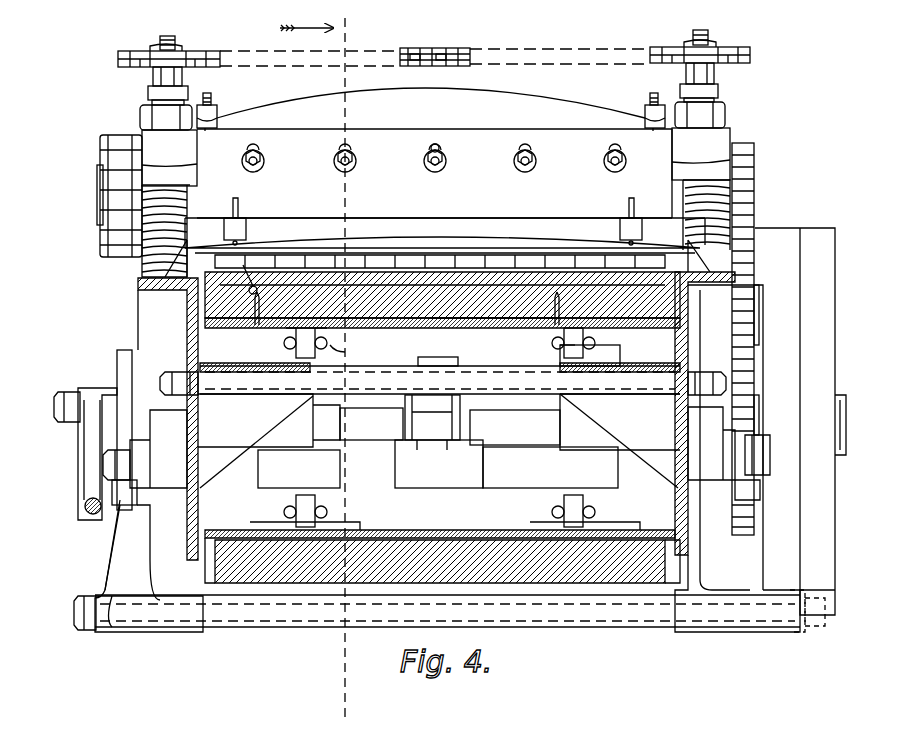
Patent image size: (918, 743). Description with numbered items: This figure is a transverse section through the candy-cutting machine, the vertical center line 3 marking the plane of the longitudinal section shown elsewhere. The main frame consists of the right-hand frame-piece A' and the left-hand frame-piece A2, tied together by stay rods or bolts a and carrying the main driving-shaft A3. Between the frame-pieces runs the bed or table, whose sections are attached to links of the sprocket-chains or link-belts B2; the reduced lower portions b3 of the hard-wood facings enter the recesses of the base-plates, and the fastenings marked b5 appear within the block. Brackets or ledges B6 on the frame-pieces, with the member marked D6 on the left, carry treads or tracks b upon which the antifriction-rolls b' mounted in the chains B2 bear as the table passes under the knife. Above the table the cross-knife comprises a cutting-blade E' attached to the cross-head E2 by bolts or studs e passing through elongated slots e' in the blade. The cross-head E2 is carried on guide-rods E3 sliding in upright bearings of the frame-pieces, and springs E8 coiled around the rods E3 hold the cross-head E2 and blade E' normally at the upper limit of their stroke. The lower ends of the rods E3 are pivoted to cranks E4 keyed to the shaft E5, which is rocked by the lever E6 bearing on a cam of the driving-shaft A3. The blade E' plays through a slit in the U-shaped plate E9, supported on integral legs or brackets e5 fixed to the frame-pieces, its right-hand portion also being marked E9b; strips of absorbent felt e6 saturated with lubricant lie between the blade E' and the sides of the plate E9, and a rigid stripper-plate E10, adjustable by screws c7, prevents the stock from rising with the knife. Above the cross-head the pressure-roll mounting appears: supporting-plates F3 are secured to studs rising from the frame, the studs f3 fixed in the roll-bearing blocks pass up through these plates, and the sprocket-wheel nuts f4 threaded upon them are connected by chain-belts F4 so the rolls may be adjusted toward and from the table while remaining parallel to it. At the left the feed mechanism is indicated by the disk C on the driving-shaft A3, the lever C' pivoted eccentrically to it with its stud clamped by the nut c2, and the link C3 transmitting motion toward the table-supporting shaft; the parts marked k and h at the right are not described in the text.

The section line 3 is at (343, 368).
The stud f3 is at (172, 38).
The nut f4 is at (213, 56).
The supporting-plate F3 is at (191, 92).
The chain-belt F4 is at (431, 104).
The cross-head E2 is at (746, 122).
The cutting-blade E' is at (434, 173).
The bolts or studs e is at (434, 161).
The elongated holes or slots e' is at (450, 139).
The U-shaped plate E9 is at (268, 218).
The bearing box E9b is at (711, 443).
The stripper-plate E10 is at (442, 241).
The pin c7 is at (240, 205).
The sprocket-chains or link-belts B2 is at (340, 335).
The pin b5 is at (512, 325).
The lower or inner portions of blocks b3 is at (448, 325).
The strips of absorbent material e6 is at (455, 270).
The treads or tracks b is at (452, 354).
The antifriction-rolls b' is at (439, 343).
The stay rods or bolts a is at (64, 609).
The shelf D6 is at (246, 362).
The brackets or ledges B6 is at (643, 362).
The clamping-nut c2 is at (432, 422).
The main driving-shaft A3 is at (515, 427).
The lever E6 is at (439, 464).
The shaft E5 is at (550, 467).
The left-hand frame-piece A2 is at (149, 455).
The right-hand frame-piece A' is at (737, 452).
The springs E8 is at (150, 262).
The guide-rods E3 is at (160, 248).
The legs or brackets e5 is at (173, 258).
The plate k is at (781, 226).
The plate h is at (820, 226).
The disk C is at (111, 421).
The lever C' is at (97, 441).
The link C3 is at (84, 496).
The levers or cranks E4 is at (146, 500).